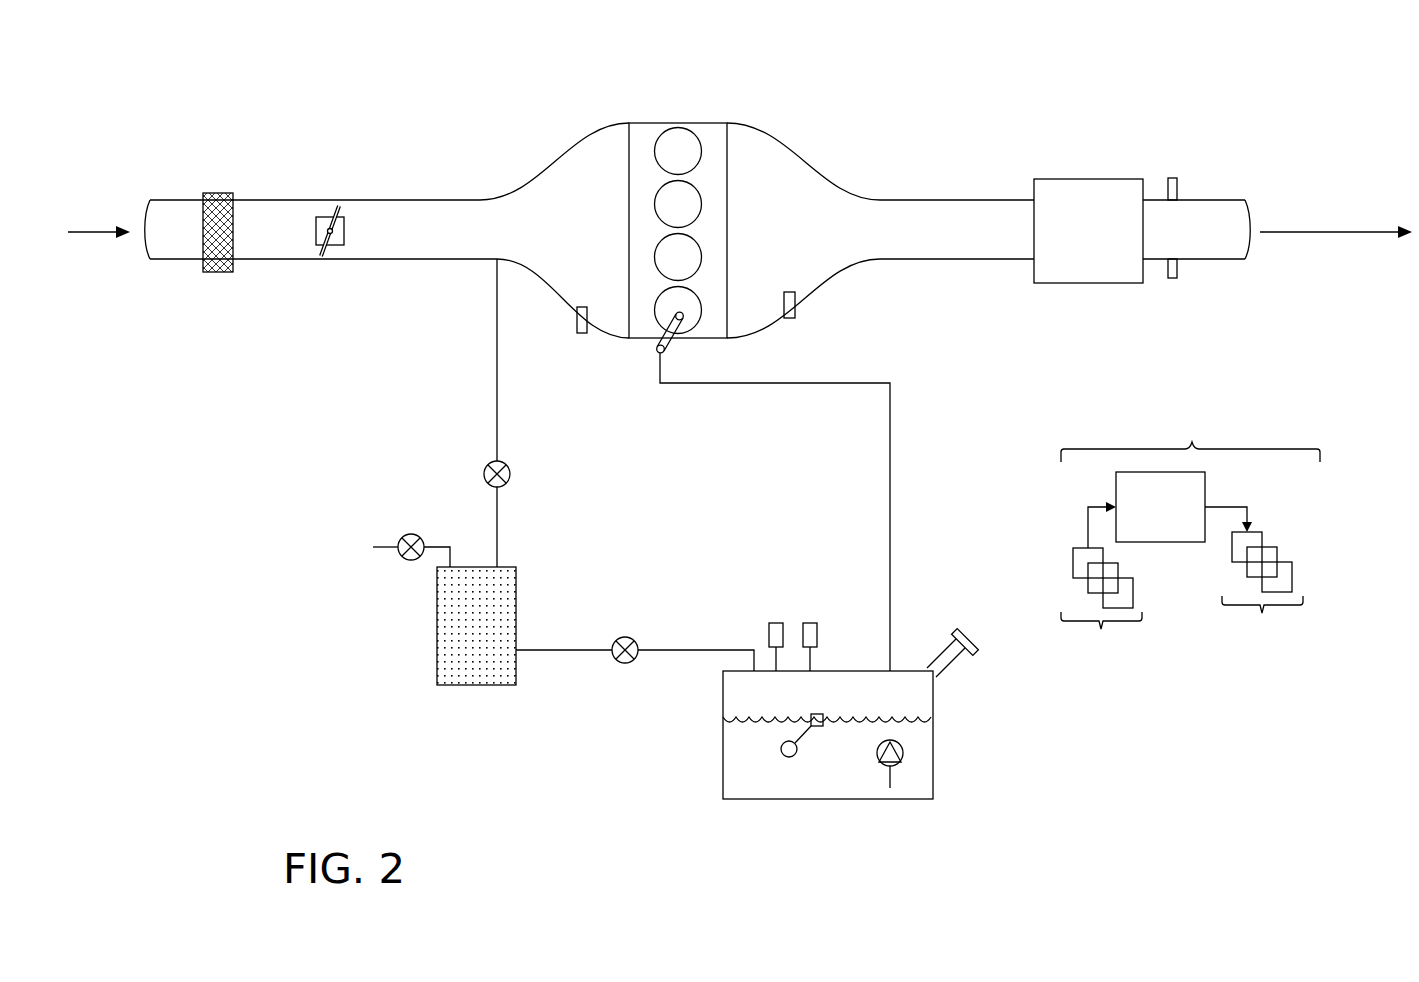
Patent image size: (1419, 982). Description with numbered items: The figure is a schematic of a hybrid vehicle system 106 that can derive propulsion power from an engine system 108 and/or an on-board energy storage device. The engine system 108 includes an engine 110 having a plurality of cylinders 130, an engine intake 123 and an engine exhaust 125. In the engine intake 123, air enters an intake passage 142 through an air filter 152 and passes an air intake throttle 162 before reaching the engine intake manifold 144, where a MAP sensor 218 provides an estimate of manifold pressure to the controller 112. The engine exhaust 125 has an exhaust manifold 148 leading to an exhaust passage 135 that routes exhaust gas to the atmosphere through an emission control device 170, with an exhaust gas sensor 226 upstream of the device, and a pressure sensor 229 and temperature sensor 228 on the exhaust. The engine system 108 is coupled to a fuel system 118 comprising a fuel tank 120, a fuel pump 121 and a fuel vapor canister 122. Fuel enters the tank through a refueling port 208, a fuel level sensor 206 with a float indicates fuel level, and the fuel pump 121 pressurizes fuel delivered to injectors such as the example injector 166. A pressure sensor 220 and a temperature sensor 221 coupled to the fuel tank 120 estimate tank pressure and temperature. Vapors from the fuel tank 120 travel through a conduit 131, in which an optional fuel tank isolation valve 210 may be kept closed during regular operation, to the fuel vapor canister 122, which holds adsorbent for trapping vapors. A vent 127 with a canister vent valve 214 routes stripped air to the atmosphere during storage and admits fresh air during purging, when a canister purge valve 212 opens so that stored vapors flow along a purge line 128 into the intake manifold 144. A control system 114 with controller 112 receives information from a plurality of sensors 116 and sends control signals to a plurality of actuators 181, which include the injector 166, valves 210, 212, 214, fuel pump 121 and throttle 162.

The hybrid vehicle system 106 is at (162, 96).
The engine system 108 is at (1290, 92).
The engine 110 is at (727, 210).
The controller 112 is at (1170, 510).
The control system 114 is at (1190, 429).
The sensors 116 is at (1101, 609).
The fuel system 118 is at (982, 826).
The fuel tank 120 is at (723, 796).
The fuel pump 121 is at (903, 757).
The fuel vapor canister 122 is at (455, 686).
The engine intake 123 is at (548, 146).
The engine exhaust 125 is at (850, 155).
The vent 127 is at (386, 547).
The purge line 128 is at (498, 432).
The cylinders 130 is at (676, 126).
The conduit 131 is at (676, 650).
The exhaust passage 135 is at (1223, 200).
The intake passage 142 is at (182, 260).
The engine intake manifold 144 is at (591, 240).
The exhaust manifold 148 is at (816, 240).
The air filter 152 is at (218, 193).
The air intake throttle 162 is at (344, 236).
The fuel injector 166 is at (672, 340).
The emission control device 170 is at (1076, 179).
The actuators 181 is at (1262, 594).
The fuel level sensor 206 is at (820, 713).
The refueling port 208 is at (964, 633).
The fuel tank isolation valve 210 is at (620, 640).
The canister purge valve 212 is at (507, 466).
The canister vent valve 214 is at (426, 522).
The MAP sensor 218 is at (577, 312).
The pressure sensor 220 is at (817, 641).
The temperature sensor 221 is at (776, 622).
The exhaust gas sensor 226 is at (795, 297).
The temperature sensor 228 is at (1173, 278).
The pressure sensor 229 is at (1173, 178).